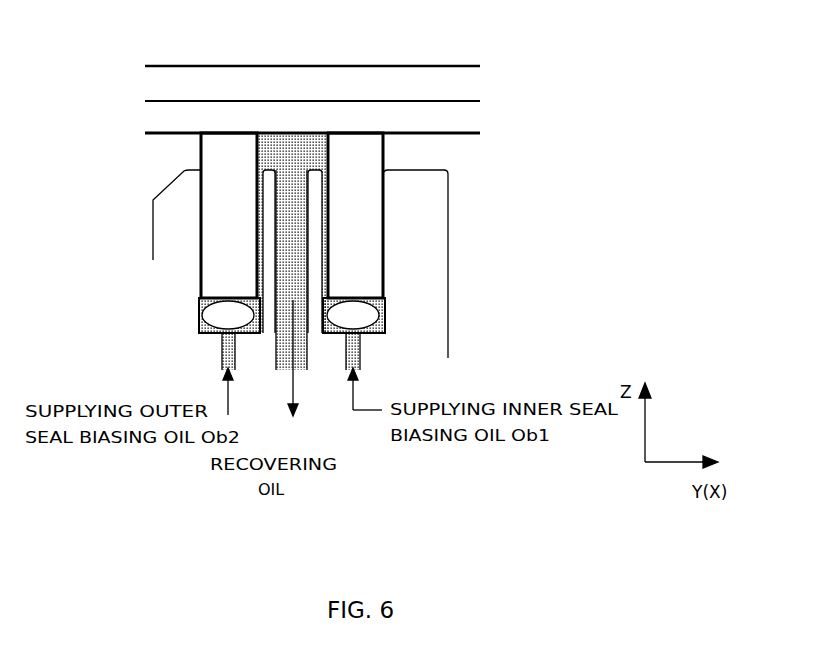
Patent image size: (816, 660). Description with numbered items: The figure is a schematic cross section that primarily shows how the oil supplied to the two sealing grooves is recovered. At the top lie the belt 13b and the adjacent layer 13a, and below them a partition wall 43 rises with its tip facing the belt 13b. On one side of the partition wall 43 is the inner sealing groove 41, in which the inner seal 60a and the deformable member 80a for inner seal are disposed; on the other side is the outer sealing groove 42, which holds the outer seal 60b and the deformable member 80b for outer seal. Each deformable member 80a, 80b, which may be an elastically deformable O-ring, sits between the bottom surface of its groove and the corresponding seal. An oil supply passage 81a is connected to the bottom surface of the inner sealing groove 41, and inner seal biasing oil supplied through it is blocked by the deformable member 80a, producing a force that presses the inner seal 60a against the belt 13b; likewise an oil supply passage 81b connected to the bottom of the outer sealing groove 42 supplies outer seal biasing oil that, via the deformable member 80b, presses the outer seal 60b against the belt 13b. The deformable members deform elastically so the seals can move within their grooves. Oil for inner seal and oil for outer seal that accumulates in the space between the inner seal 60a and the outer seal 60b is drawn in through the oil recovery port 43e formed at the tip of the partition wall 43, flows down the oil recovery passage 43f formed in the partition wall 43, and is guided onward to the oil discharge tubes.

The housing outer wall 13a is at (450, 82).
The belt 13b is at (457, 118).
The partition wall 43 is at (267, 176).
The oil recovery port 43e is at (293, 204).
The oil recovery passage 43f is at (310, 357).
The outer seal 60b is at (199, 155).
The inner seal 60a is at (357, 217).
The outer sealing groove 42 is at (199, 308).
The inner sealing groove 41 is at (385, 303).
The deformable member for outer seal 80b is at (215, 320).
The deformable member for inner seal 80a is at (365, 320).
The oil supply passage 81b is at (222, 355).
The oil supply passage 81a is at (360, 354).